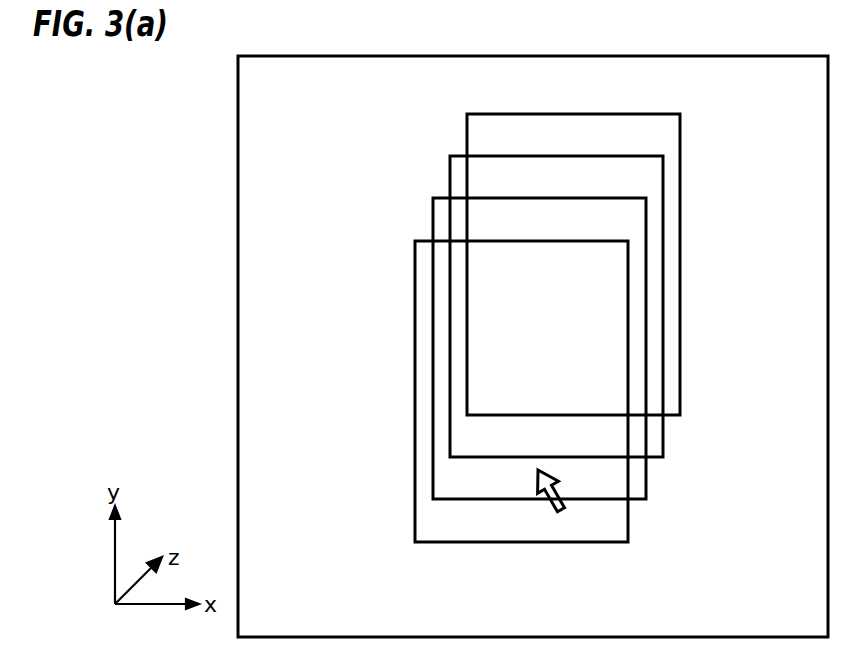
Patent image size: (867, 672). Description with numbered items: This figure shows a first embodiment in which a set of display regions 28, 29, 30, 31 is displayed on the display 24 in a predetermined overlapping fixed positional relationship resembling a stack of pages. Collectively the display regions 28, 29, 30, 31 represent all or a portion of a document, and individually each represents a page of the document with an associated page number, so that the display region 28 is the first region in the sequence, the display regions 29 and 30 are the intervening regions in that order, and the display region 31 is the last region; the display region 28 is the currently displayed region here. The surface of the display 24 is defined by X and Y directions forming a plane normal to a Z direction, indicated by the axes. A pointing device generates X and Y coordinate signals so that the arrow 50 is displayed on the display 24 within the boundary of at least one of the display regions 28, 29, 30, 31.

The display 24 is at (238, 89).
The display region 28 is at (415, 257).
The display region 29 is at (433, 214).
The display region 30 is at (450, 172).
The display region 31 is at (467, 130).
The arrow 50 is at (535, 478).